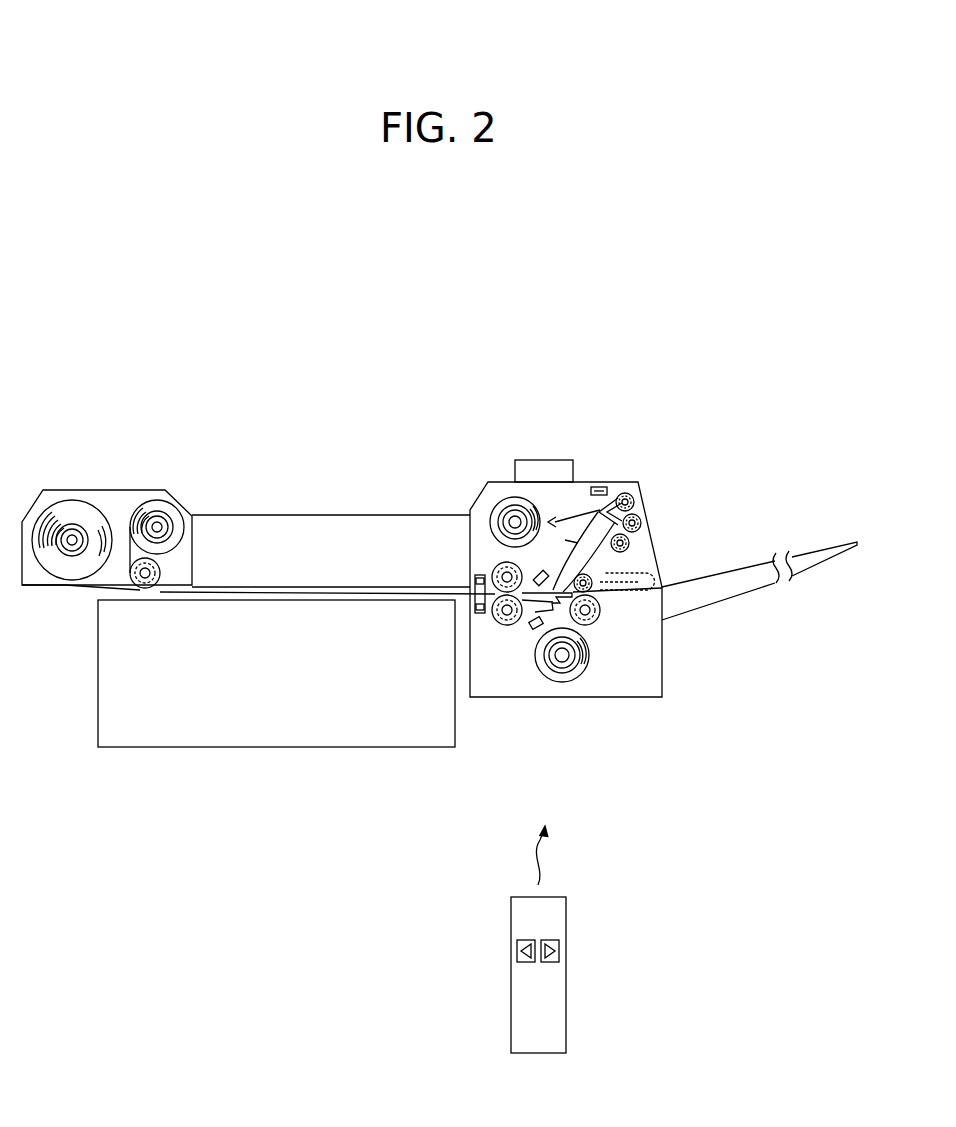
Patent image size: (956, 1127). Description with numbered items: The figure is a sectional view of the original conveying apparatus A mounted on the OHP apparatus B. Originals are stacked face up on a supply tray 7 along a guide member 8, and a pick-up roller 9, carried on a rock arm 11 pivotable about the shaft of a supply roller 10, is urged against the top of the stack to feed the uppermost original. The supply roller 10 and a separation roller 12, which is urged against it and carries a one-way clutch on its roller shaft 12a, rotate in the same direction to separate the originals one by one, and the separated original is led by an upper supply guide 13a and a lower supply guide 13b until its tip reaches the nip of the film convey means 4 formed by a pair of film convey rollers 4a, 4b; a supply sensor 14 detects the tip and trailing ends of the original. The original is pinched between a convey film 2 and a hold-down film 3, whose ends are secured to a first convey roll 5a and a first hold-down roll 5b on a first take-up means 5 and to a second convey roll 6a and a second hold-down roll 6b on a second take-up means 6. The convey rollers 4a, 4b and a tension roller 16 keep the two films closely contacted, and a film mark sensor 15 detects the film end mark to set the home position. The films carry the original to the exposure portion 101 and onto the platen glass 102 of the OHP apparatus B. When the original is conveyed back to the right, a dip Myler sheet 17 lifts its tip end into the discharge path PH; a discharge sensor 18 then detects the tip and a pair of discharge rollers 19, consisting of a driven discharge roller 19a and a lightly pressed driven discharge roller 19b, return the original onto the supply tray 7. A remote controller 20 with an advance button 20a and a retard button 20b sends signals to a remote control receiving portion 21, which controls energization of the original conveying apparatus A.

The convey film 2 is at (532, 634).
The hold-down film 3 is at (490, 560).
The film convey means 4 is at (460, 572).
The film convey roller 4a is at (492, 570).
The film convey roller 4b is at (493, 614).
The first take-up means 5 is at (118, 462).
The first convey roll 5a is at (72, 522).
The first hold-down roll 5b is at (157, 512).
The second take-up means 6 is at (510, 703).
The second convey roll 6a is at (558, 665).
The second hold-down roll 6b is at (490, 500).
The supply tray 7 is at (747, 582).
The guide member 8 is at (640, 567).
The pick-up roller 9 is at (629, 543).
The supply roller 10 is at (592, 587).
The rock arm 11 is at (640, 593).
The separation roller 12 is at (596, 618).
The roller shaft 12a is at (588, 648).
The upper supply guide 13a is at (578, 543).
The lower supply guide 13b is at (512, 622).
The supply sensor 14 is at (528, 628).
The film mark sensor 15 is at (476, 611).
The tension roller 16 is at (160, 573).
The dip Myler sheet 17 is at (547, 572).
The discharge sensor 18 is at (607, 488).
The pair of discharge rollers 19 is at (653, 495).
The discharge roller 19a is at (633, 498).
The driven discharge roller 19b is at (641, 522).
The remote controller 20 is at (583, 1022).
The advance button 20a is at (517, 950).
The retard button 20b is at (563, 950).
The remote control receiving portion 21 is at (530, 460).
The exposure portion 101 is at (143, 730).
The platen glass 102 is at (244, 596).
The original conveying apparatus A is at (290, 510).
The OHP apparatus B is at (262, 752).
The discharge path PH is at (575, 540).